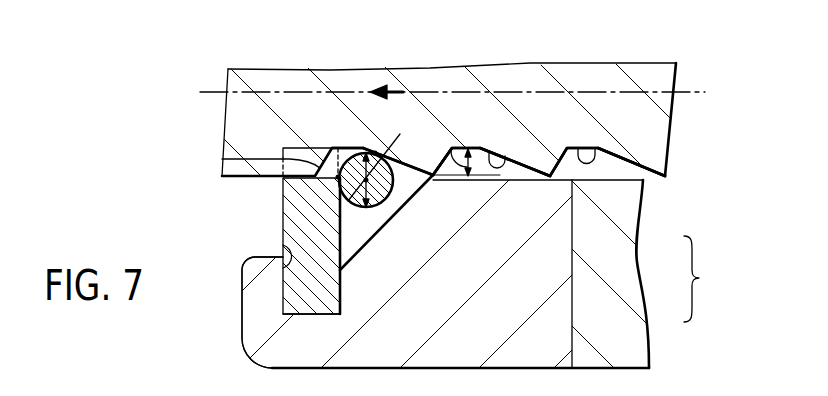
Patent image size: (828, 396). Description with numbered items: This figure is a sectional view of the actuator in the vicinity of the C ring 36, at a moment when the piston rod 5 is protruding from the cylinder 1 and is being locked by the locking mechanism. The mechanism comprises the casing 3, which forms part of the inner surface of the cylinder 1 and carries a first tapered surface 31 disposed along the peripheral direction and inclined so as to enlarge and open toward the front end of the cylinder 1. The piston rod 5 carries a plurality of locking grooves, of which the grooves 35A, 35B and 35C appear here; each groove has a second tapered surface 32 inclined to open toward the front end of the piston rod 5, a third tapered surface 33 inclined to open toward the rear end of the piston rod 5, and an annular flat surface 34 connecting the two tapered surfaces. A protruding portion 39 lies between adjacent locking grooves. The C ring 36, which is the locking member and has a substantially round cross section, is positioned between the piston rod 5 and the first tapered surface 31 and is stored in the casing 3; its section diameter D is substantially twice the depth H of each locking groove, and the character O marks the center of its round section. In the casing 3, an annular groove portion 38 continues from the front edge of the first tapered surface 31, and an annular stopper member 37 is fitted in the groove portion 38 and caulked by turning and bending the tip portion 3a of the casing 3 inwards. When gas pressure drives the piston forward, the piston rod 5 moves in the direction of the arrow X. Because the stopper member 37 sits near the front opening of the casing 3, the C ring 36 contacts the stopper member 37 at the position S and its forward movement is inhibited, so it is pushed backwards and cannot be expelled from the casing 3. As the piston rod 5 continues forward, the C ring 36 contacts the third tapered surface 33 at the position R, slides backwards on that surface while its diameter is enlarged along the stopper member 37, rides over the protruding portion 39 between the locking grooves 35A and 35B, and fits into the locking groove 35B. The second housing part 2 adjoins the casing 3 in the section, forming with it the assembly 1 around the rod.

The cylinder 1 is at (699, 279).
The housing body 2 is at (614, 305).
The casing 3 is at (553, 250).
The tip portion of the casing 3a is at (250, 283).
The piston rod 5 is at (656, 120).
The first tapered surface 31 is at (313, 228).
The second tapered surface 32 is at (224, 162).
The third tapered surface 33 is at (408, 158).
The annular flat surface 34 is at (331, 147).
The locking groove 35A is at (397, 216).
The locking groove 35B is at (489, 150).
The locking groove 35C is at (582, 150).
The C ring 36 is at (379, 207).
The stopper member 37 is at (294, 303).
The annular groove portion 38 is at (284, 245).
The protruding portion 39 is at (657, 162).
The arrow indicating direction of piston rod movement X is at (398, 88).
The position S is at (327, 146).
The position R is at (376, 150).
The section diameter of the C ring D is at (377, 157).
The depth of the locking groove H is at (452, 148).
The center of the round section of the C ring O is at (363, 190).